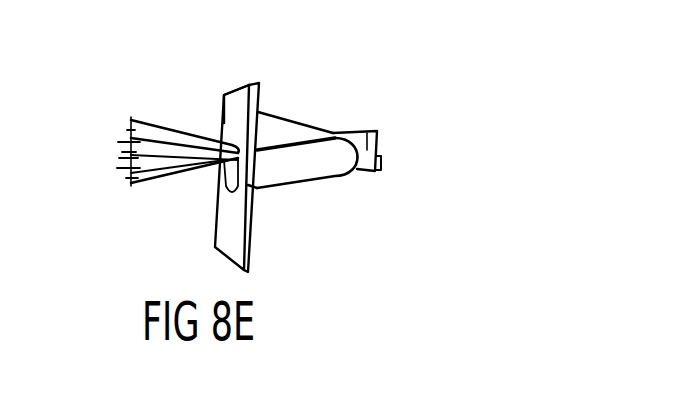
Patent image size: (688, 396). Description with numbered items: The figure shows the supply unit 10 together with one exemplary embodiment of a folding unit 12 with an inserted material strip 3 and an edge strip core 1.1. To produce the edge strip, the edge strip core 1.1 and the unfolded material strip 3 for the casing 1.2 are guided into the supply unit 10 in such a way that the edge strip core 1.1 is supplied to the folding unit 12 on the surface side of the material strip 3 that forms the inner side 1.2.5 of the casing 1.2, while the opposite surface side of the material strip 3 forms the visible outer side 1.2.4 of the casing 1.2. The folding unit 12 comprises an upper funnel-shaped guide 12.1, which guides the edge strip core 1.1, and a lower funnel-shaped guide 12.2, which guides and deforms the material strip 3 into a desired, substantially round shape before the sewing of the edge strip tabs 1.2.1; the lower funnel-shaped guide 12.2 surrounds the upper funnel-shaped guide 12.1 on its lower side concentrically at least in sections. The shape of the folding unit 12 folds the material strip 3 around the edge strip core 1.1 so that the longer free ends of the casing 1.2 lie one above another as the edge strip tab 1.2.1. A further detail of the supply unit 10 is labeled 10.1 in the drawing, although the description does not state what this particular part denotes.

The edge strip core 1.1 is at (130, 130).
The casing 1.2 is at (213, 166).
The edge strip tab 1.2.1 is at (368, 133).
The visible outer side 1.2.4 is at (182, 170).
The inner side 1.2.5 is at (128, 168).
The material strip 3 is at (381, 160).
The supply unit 10 is at (250, 237).
The plate opening 10.1 is at (233, 110).
The folding unit 12 is at (315, 124).
The upper funnel-shaped guide 12.1 is at (285, 128).
The lower funnel-shaped guide 12.2 is at (328, 168).